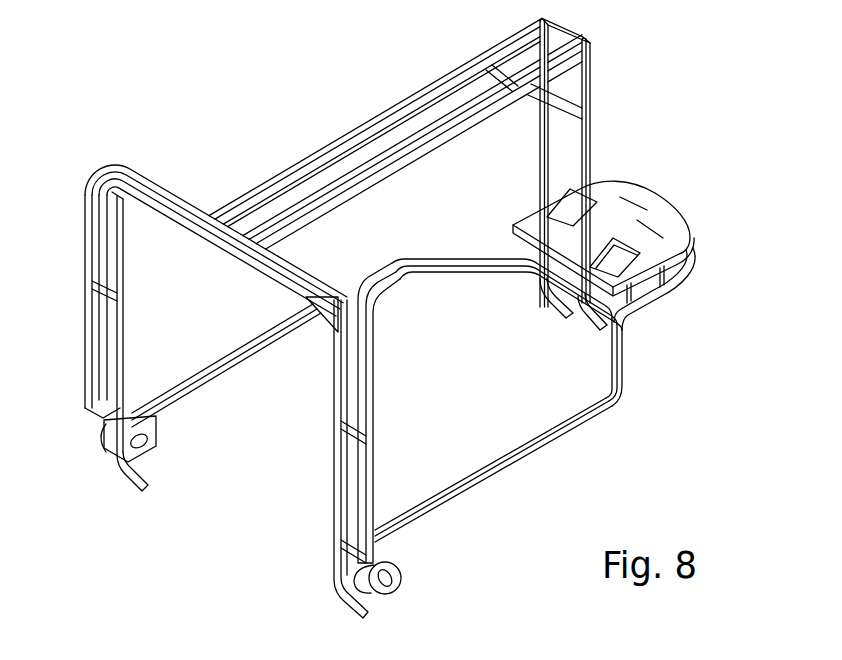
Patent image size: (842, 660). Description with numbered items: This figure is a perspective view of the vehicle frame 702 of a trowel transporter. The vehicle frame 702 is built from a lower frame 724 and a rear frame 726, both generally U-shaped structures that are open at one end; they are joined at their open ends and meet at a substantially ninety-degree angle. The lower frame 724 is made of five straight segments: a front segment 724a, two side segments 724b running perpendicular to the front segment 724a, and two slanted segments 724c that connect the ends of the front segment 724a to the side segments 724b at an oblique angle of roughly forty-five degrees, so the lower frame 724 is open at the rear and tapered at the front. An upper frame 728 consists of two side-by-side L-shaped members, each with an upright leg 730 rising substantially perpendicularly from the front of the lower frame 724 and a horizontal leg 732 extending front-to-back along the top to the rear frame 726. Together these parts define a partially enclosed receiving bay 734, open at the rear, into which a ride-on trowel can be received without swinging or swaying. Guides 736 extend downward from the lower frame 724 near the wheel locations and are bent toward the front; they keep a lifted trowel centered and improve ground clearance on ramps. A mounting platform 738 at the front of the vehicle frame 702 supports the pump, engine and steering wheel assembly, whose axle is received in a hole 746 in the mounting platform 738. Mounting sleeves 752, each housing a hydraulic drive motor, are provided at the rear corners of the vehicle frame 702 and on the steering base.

The vehicle frame 702 is at (294, 98).
The lower frame 724 is at (492, 477).
The front segment 724a is at (523, 276).
The side segments 724b is at (213, 363).
The slanted segments 724c is at (450, 253).
The rear frame 726 is at (85, 287).
The upper frame 728 is at (585, 40).
The upright leg 730 is at (538, 150).
The horizontal leg 732 is at (407, 91).
The receiving bay 734 is at (247, 527).
The guides 736 is at (85, 498).
The mounting platform 738 is at (691, 227).
The hole 746 is at (628, 213).
The mounting sleeve 752 is at (160, 436).